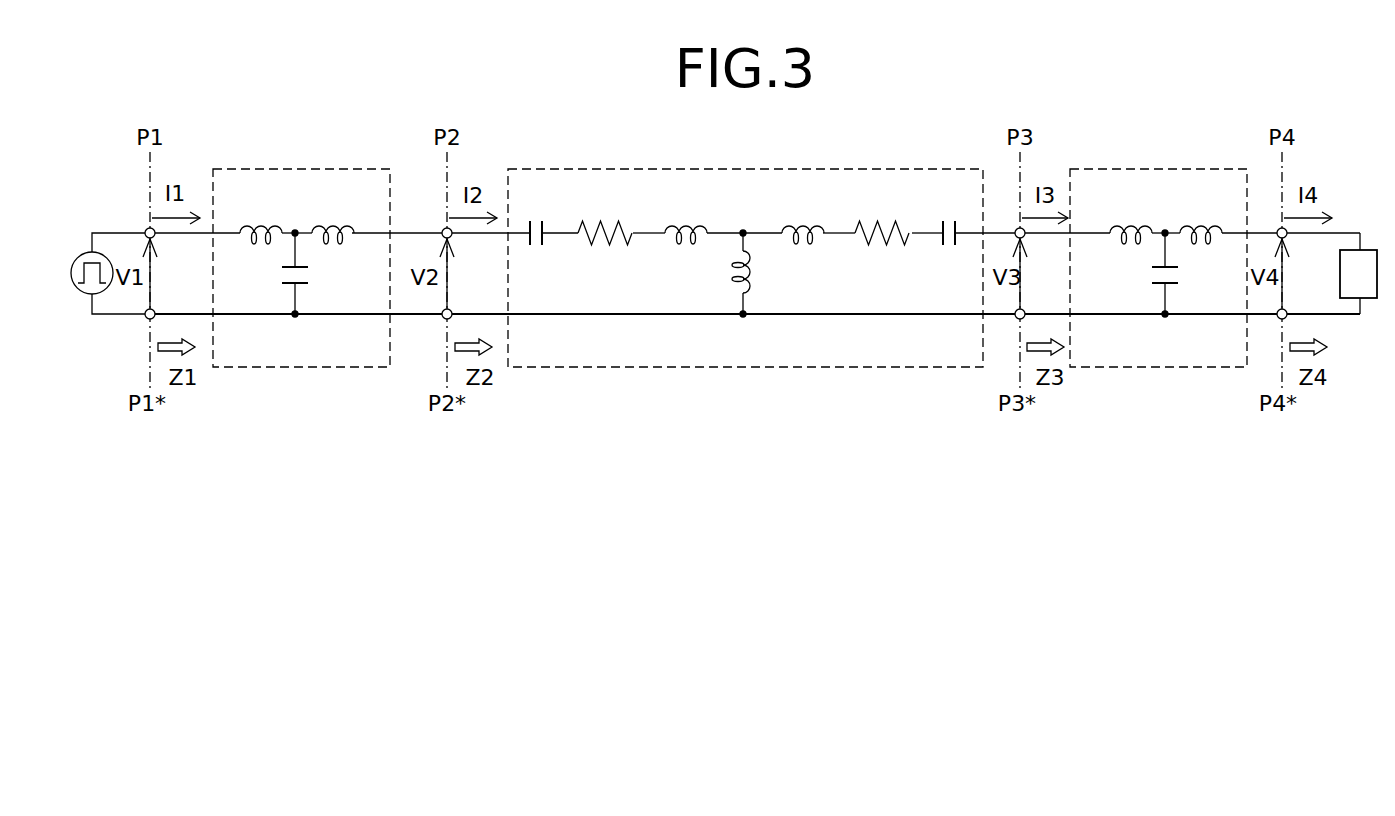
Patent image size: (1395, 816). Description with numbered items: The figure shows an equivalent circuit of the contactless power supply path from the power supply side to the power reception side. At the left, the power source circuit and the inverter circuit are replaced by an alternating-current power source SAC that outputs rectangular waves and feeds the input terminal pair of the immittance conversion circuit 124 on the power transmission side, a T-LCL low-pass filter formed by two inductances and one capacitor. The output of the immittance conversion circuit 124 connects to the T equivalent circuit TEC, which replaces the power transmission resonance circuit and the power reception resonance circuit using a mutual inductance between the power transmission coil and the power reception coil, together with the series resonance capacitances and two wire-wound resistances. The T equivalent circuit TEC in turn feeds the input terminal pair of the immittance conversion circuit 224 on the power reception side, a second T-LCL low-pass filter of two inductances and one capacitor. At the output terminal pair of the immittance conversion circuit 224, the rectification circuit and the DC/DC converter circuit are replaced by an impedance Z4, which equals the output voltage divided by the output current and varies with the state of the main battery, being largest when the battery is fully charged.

The immittance conversion circuit 124 is at (303, 169).
The immittance conversion circuit 224 is at (1158, 169).
The T equivalent circuit TEC is at (740, 169).
The alternating-current power source SAC is at (76, 235).
The impedance Z4 is at (1358, 273).